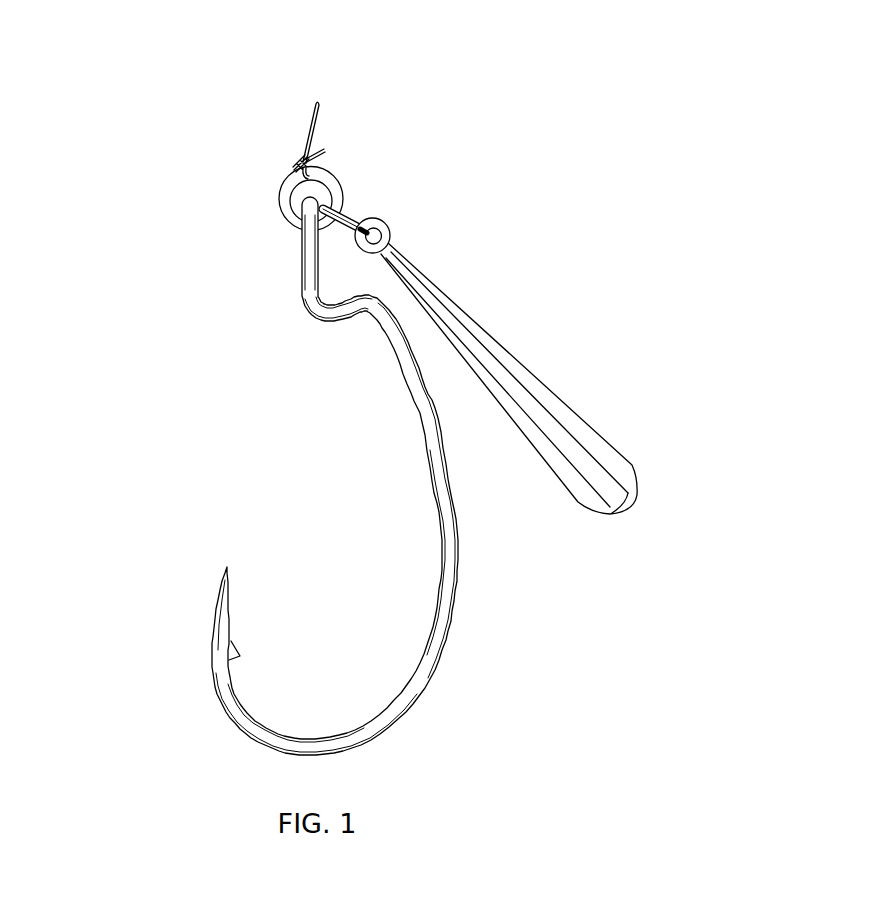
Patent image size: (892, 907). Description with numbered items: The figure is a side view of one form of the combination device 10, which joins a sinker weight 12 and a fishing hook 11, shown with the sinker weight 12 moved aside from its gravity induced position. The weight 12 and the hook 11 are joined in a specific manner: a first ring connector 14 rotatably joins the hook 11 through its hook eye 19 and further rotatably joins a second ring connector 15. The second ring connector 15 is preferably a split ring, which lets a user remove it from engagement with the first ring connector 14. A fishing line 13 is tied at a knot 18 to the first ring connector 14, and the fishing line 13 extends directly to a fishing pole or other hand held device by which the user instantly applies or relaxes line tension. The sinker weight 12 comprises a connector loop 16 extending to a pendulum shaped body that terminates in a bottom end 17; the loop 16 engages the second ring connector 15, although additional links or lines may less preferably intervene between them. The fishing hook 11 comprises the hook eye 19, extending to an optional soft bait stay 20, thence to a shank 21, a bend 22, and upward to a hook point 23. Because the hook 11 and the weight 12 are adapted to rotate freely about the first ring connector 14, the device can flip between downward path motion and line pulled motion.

The combination device 10 is at (507, 213).
The fishing hook 11 is at (432, 712).
The sinker weight 12 is at (540, 362).
The fishing line 13 is at (318, 115).
The first ring connector 14 is at (286, 176).
The second ring connector 15 is at (358, 216).
The connector loop 16 is at (384, 217).
The bottom end 17 is at (634, 513).
The knot 18 is at (298, 164).
The hook eye 19 is at (302, 242).
The soft bait stay 20 is at (302, 290).
The shank 21 is at (435, 477).
The bend 22 is at (262, 742).
The hook point 23 is at (215, 628).